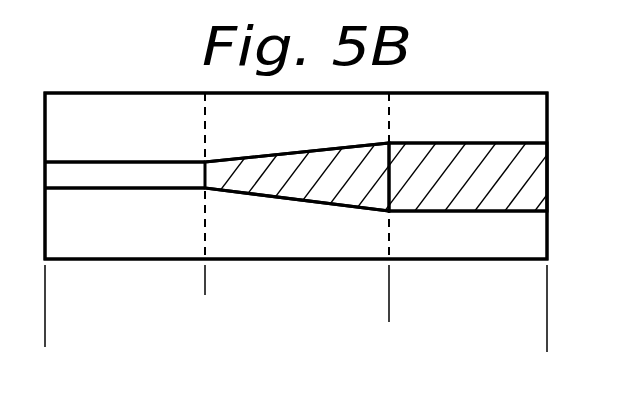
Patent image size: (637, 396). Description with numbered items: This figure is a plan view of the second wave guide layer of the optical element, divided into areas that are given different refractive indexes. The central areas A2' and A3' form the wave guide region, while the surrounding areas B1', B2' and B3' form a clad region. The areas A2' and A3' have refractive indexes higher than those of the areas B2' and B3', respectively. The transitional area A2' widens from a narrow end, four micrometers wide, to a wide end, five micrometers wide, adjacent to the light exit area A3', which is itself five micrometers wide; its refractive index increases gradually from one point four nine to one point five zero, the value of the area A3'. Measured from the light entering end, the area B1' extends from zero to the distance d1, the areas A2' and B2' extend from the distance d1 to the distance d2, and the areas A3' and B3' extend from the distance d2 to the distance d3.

The clad region area B1' is at (125, 176).
The clad region area B2' is at (297, 176).
The clad region area B3' is at (468, 176).
The transitional area A2' is at (320, 177).
The light exit area A3' is at (470, 177).
The distance d1 is at (45, 288).
The distance d2 is at (45, 315).
The distance d3 is at (45, 342).